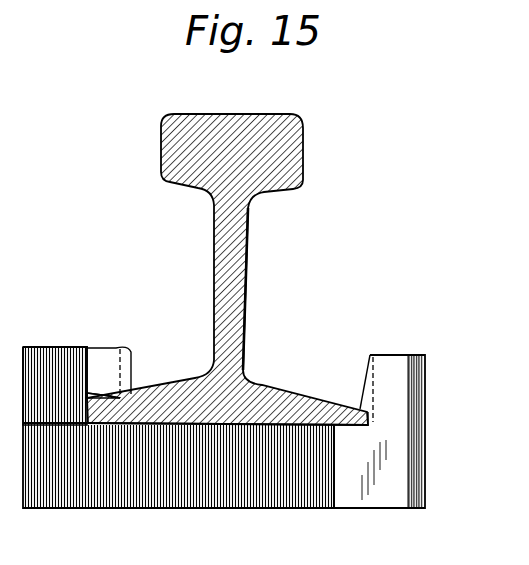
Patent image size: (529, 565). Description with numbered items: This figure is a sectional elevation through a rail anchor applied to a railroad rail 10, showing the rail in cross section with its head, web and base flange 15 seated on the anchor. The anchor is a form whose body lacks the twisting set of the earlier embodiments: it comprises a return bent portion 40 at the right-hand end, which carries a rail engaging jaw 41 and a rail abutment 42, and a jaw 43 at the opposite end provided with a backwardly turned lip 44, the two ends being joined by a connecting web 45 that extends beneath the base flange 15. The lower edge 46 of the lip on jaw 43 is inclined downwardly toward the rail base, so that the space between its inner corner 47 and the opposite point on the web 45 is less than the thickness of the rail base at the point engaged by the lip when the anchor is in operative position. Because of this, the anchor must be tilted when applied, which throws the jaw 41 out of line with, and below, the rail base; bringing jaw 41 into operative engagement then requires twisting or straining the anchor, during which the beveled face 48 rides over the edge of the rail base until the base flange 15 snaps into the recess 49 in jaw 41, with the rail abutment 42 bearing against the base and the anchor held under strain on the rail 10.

The railroad rail 10 is at (238, 266).
The base flange 15 is at (168, 392).
The return bent portion 40 is at (422, 412).
The rail engaging jaw 41 is at (395, 392).
The rail abutment 42 is at (370, 357).
The jaw 43 is at (42, 357).
The backwardly turned lip 44 is at (116, 352).
The connecting web 45 is at (243, 480).
The lower edge 46 is at (97, 352).
The inner corner 47 is at (122, 394).
The beveled face 48 is at (361, 395).
The recess 49 is at (371, 425).